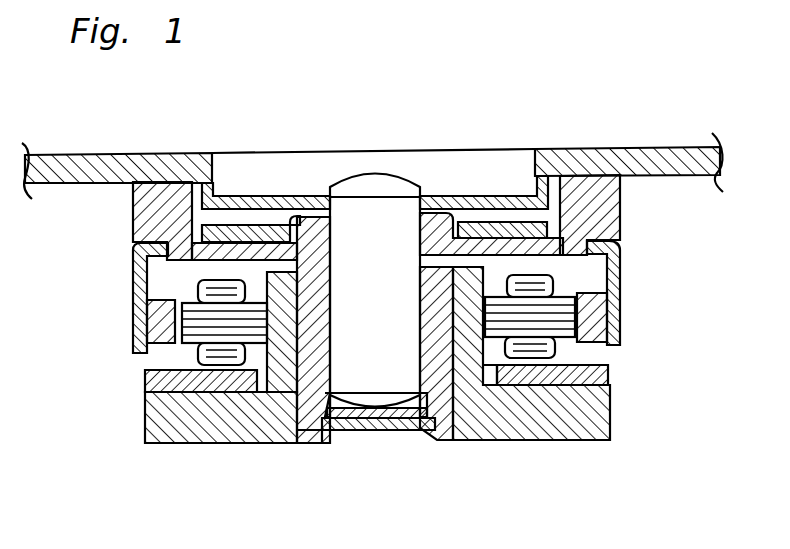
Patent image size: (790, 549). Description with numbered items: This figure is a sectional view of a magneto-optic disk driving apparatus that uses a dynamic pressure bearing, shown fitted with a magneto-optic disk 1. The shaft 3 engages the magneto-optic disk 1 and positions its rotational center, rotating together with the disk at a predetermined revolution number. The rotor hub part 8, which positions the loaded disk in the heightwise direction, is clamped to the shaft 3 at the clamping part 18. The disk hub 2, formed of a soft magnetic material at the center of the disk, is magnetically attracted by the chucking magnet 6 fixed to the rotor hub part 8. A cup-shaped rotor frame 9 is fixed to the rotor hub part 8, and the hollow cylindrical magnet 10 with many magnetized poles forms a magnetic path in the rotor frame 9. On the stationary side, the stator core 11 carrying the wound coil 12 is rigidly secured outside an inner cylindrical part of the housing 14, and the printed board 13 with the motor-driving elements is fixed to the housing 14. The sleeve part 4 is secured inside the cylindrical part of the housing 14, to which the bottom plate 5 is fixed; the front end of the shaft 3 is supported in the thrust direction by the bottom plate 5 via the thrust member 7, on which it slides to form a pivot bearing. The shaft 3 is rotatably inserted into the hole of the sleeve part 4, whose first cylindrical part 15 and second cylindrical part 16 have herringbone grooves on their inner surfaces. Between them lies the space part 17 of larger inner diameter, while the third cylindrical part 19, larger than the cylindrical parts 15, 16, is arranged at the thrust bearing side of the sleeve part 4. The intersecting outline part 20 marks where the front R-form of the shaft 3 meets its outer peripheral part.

The magneto-optic disk 1 is at (583, 155).
The disk hub 2 is at (240, 196).
The shaft 3 is at (385, 186).
The sleeve part 4 is at (313, 423).
The bottom plate 5 is at (403, 418).
The chucking magnet 6 is at (468, 225).
The thrust member 7 is at (357, 417).
The rotor hub part 8 is at (590, 212).
The rotor frame 9 is at (612, 265).
The magnet 10 is at (593, 314).
The stator core 11 is at (600, 392).
The coil 12 is at (540, 368).
The printed board 13 is at (600, 370).
The housing 14 is at (493, 427).
The first cylindrical part 15 is at (327, 293).
The space part 17 is at (267, 327).
The second cylindrical part 16 is at (145, 387).
The clamping part 18 is at (440, 196).
The third cylindrical part 19 is at (322, 370).
The intersecting outline part 20 is at (427, 413).